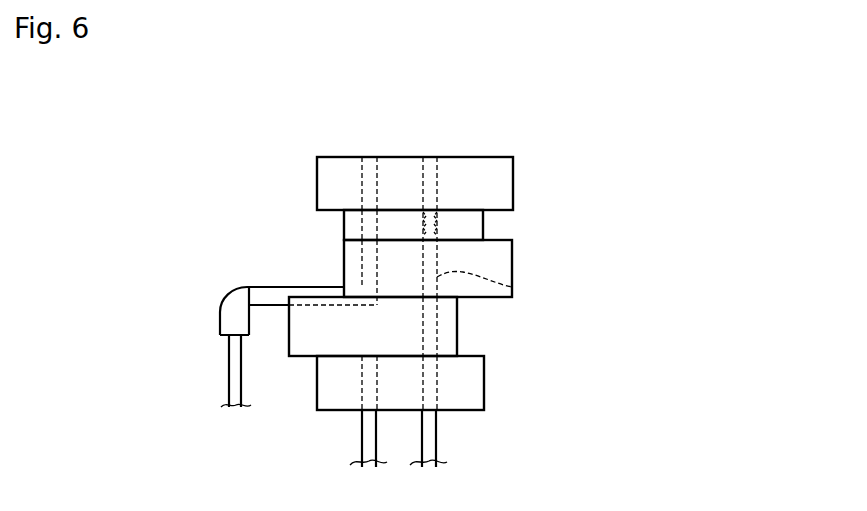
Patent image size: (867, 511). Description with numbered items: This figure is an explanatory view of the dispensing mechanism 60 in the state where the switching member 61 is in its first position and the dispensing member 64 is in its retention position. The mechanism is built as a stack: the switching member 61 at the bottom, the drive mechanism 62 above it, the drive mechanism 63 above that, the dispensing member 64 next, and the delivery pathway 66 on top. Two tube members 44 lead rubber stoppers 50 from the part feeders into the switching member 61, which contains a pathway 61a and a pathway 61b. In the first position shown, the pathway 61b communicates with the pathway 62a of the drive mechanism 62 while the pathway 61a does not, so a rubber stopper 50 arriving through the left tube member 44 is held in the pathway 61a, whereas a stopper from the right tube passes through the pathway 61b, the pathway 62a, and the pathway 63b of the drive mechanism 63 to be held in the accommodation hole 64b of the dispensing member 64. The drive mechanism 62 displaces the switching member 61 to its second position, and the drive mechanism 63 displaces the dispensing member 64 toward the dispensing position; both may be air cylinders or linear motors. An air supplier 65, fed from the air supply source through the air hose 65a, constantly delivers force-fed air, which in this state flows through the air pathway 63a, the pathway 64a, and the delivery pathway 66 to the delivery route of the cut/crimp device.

The dispensing mechanism 60 is at (596, 107).
The delivery pathway 66 is at (360, 178).
The dispensing member 64 is at (477, 227).
The pathway 64a is at (359, 226).
The accommodation hole 64b is at (442, 222).
The drive mechanism 63 is at (500, 253).
The air pathway 63a is at (359, 266).
The pathway 63b is at (512, 287).
The drive mechanism 62 is at (297, 343).
The pathway 62a is at (439, 329).
The switching member 61 is at (470, 388).
The pathway 61a is at (357, 395).
The pathway 61b is at (438, 393).
The rubber stopper 50 is at (427, 212).
The tube member 44 is at (362, 447).
The air supplier 65 is at (228, 308).
The air hose 65a is at (233, 385).